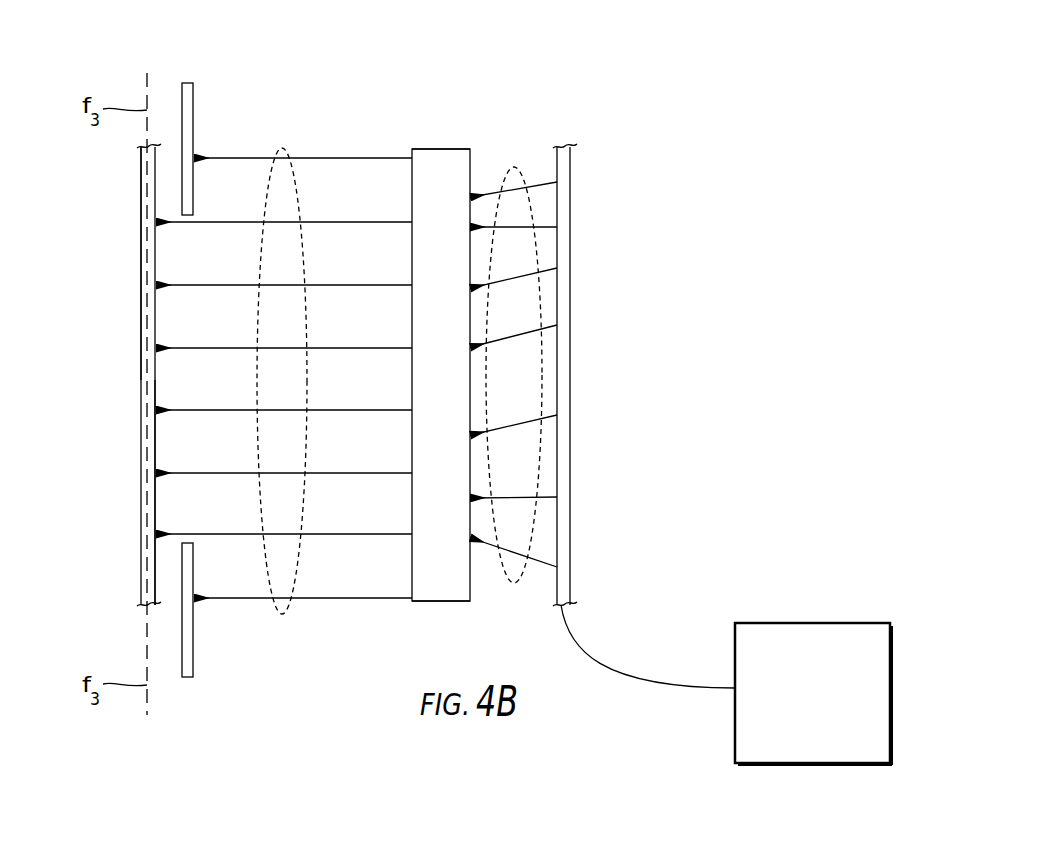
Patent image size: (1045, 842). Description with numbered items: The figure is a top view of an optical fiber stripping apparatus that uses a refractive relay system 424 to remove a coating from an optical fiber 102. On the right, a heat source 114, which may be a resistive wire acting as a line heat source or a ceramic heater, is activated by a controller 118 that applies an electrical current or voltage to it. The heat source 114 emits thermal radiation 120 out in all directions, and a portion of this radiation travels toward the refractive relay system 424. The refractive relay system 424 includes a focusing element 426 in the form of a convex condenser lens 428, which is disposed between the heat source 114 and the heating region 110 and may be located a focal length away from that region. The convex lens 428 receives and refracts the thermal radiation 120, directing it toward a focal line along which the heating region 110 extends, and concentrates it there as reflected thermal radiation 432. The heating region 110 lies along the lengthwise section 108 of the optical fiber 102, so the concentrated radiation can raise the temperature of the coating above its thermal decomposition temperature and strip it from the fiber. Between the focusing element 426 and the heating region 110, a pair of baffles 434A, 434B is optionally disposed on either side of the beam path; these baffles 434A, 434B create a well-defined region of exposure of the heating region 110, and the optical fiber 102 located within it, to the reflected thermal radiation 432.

The optical fiber 102 is at (137, 557).
The lengthwise section 108 is at (141, 238).
The heating region 110 is at (141, 380).
The heat source 114 is at (567, 203).
The controller 118 is at (829, 720).
The thermal radiation 120 is at (518, 178).
The refractive relay system 424 is at (390, 145).
The focusing element 426 is at (437, 158).
The convex lens 428 is at (428, 570).
The reflected thermal radiation 432 is at (282, 148).
The baffle 434A is at (193, 110).
The baffle 434B is at (193, 630).